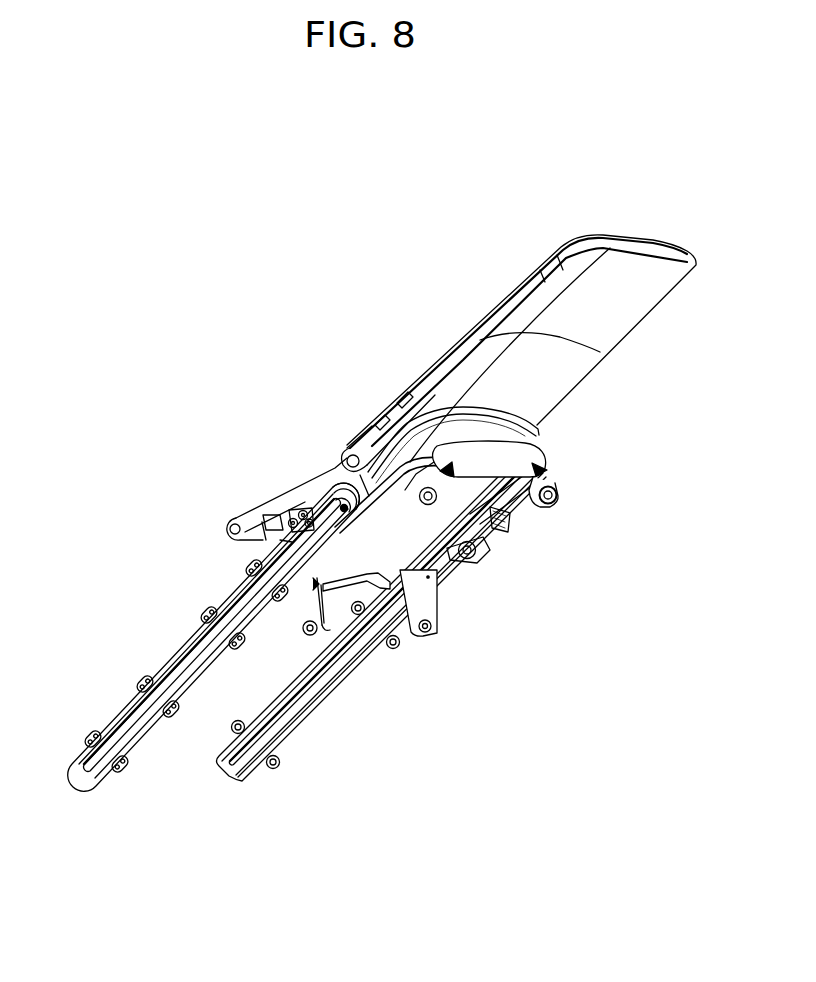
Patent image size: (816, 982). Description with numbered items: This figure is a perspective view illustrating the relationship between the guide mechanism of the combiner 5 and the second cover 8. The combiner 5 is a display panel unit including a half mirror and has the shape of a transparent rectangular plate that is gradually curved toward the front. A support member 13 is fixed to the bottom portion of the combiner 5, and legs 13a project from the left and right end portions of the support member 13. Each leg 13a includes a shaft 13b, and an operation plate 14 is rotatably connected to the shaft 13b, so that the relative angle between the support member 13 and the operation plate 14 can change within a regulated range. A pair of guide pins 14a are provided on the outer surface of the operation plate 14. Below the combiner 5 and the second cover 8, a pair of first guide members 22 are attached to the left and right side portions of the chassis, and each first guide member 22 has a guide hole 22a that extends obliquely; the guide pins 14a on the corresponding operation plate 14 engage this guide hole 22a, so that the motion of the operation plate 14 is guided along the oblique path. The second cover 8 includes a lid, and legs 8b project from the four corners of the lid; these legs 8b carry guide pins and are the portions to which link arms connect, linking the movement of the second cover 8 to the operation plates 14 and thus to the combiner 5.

The combiner 5 is at (523, 282).
The second cover 8 is at (545, 468).
The legs 8b is at (425, 606).
The support member 13 is at (370, 422).
The legs 13a is at (241, 518).
The shaft 13b is at (348, 457).
The operation plate 14 is at (308, 498).
The guide pins 14a is at (258, 548).
The first guide members 22 is at (73, 774).
The guide hole 22a is at (90, 776).